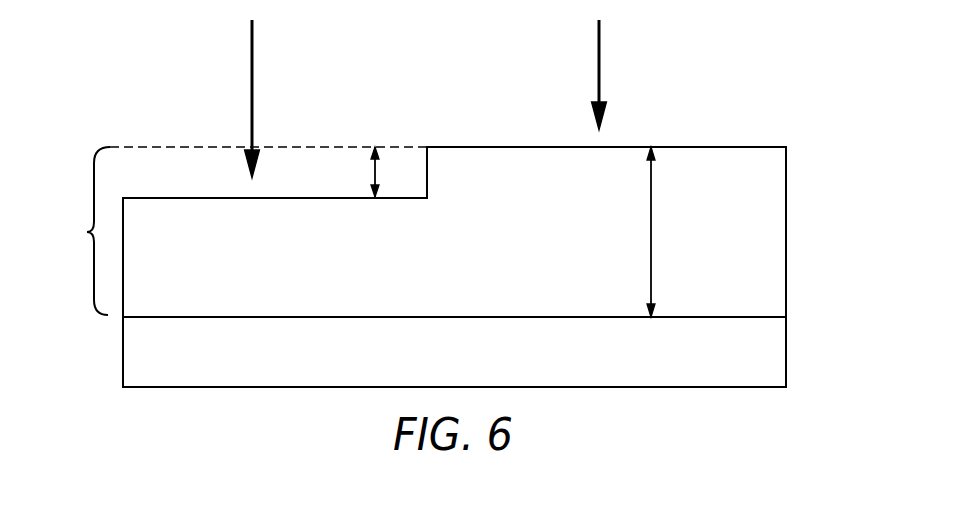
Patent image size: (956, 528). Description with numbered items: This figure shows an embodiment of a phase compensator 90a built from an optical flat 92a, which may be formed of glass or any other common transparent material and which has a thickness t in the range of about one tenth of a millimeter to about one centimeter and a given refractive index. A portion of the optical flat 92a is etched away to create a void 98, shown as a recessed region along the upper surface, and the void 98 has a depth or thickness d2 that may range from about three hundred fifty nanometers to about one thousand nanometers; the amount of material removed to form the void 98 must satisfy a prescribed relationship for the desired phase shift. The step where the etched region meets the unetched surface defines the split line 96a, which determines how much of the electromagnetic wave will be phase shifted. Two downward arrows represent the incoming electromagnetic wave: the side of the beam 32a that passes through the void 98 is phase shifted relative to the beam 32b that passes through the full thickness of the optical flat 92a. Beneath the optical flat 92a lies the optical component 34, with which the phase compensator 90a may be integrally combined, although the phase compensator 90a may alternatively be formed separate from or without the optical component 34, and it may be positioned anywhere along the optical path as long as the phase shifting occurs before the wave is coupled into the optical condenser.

The one side of the beam 32a is at (250, 50).
The beam 32b is at (601, 50).
The void 98 is at (197, 176).
The phase compensator 90a is at (74, 231).
The split line 96a is at (428, 178).
The optical flat 92a is at (772, 224).
The optical component 34 is at (773, 356).
The depth or thickness of the void d2 is at (373, 170).
The thickness of the optical flat t is at (650, 238).